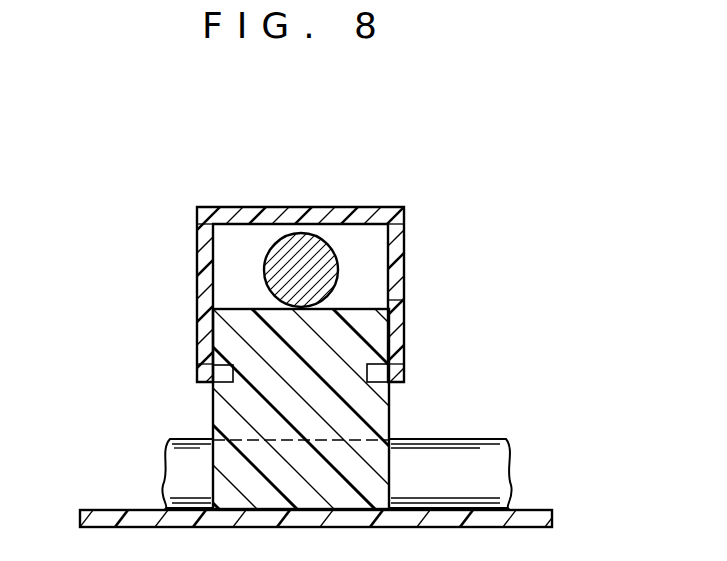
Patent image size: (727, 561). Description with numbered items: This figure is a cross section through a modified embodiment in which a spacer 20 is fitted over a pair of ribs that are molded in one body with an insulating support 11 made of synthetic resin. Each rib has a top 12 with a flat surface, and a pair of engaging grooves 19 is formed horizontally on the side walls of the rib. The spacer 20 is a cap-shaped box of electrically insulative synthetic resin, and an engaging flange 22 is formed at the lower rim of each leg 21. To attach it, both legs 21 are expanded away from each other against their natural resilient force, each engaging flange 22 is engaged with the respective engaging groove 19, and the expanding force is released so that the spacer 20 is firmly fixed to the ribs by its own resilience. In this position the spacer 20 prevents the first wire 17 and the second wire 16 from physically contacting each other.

The insulating support 11 is at (143, 518).
The top 12 is at (218, 302).
The second wire 16 is at (187, 449).
The first wire 17 is at (314, 261).
The engaging grooves 19 is at (210, 386).
The spacer 20 is at (298, 180).
The leg 21 is at (200, 286).
The engaging flange 22 is at (402, 338).